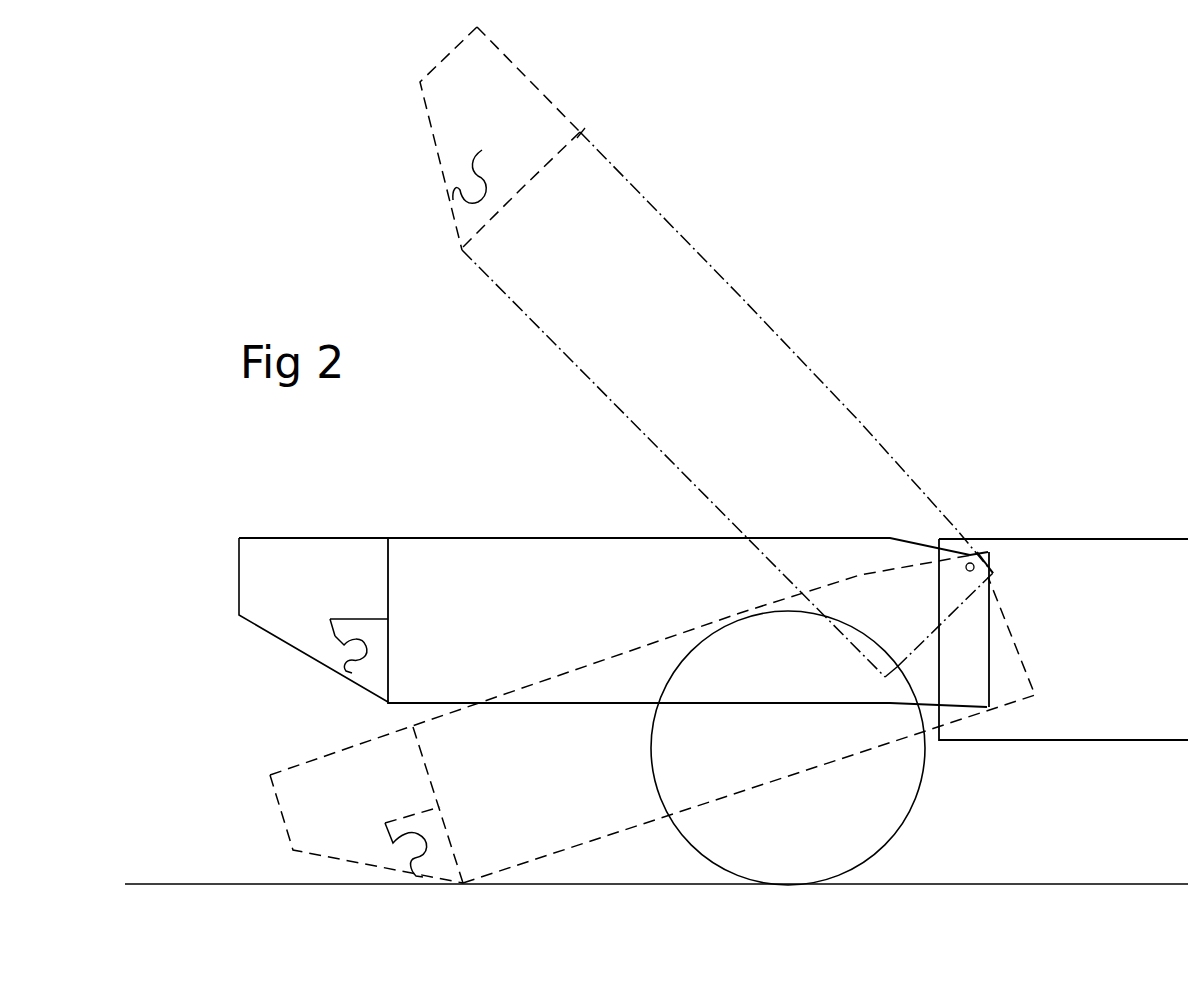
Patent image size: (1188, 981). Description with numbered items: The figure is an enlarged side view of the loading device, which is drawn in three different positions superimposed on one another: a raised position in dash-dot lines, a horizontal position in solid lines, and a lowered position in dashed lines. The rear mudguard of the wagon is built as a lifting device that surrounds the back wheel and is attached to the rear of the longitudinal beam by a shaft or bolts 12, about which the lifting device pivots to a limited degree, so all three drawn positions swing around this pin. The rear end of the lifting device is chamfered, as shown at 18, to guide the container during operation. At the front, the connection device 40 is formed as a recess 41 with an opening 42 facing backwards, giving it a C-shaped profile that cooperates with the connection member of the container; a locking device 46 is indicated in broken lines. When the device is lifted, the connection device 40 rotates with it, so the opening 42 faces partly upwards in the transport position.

The shaft or bolts 12 is at (975, 552).
The chamfered rear portion 18 is at (335, 778).
The connection device 40 is at (343, 585).
The recess 41 is at (340, 646).
The opening 42 is at (338, 656).
The locking device 46 is at (362, 626).